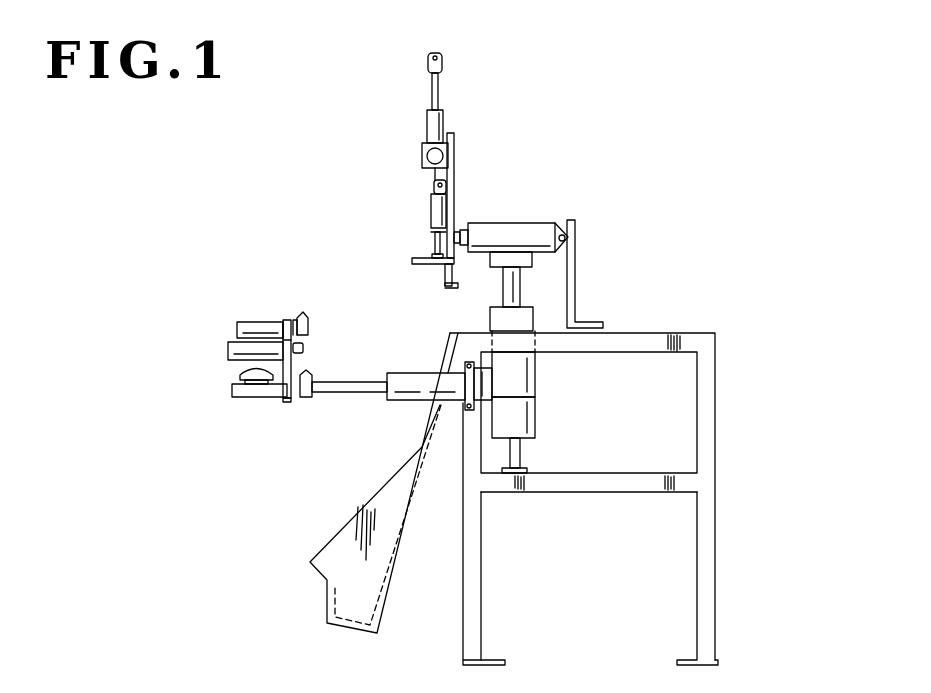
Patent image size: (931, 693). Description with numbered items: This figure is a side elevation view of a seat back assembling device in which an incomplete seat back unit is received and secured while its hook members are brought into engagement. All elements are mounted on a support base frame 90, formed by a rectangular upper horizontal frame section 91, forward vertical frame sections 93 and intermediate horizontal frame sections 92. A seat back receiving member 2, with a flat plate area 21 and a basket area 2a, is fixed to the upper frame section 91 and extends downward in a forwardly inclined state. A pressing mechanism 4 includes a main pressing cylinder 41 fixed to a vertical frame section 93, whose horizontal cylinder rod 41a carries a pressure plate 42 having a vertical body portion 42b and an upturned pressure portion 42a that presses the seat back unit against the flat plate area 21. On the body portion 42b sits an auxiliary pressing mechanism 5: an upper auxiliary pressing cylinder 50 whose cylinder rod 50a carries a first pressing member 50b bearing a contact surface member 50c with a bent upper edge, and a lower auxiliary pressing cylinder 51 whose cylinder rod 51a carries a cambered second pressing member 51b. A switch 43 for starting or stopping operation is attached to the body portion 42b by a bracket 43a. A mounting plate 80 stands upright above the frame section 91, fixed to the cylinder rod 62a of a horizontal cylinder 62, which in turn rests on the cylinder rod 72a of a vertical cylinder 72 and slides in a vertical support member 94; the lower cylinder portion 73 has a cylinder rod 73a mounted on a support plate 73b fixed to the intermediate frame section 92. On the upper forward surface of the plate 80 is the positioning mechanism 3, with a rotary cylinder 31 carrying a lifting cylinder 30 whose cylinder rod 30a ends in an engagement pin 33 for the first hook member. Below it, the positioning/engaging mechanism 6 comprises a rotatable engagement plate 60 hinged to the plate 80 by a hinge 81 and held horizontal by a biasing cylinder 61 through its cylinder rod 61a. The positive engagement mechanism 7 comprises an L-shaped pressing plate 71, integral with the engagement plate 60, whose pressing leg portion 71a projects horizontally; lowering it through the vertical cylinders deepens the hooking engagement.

The seat back receiving member 2 is at (323, 588).
The basket area 2a is at (350, 607).
The flat plate area 21 is at (422, 447).
The positioning mechanism 3 is at (417, 113).
The lifting cylinder 30 is at (445, 122).
The cylinder rod 30a is at (438, 90).
The rotary cylinder 31 is at (422, 148).
The engagement pin 33 is at (437, 53).
The pressing mechanism 4 is at (347, 400).
The main pressing cylinder 41 is at (411, 383).
The cylinder rod 41a is at (360, 388).
The pressure plate 42 is at (287, 400).
The upturned pressure portion 42a is at (302, 402).
The vertical body portion 42b is at (283, 362).
The switch 43 is at (235, 373).
The bracket 43a is at (238, 400).
The auxiliary pressing mechanism 5 is at (228, 318).
The upper auxiliary pressing cylinder 50 is at (260, 320).
The cylinder rod 50a is at (292, 320).
The first pressing member 50b is at (297, 320).
The contact surface member 50c is at (308, 317).
The lower auxiliary pressing cylinder 51 is at (230, 345).
The cylinder rod 51a is at (312, 376).
The second pressing member 51b is at (302, 348).
The positioning/engaging mechanism 6 is at (412, 248).
The rotatable engagement plate 60 is at (418, 262).
The biasing cylinder 61 is at (432, 198).
The cylinder rod 61a is at (430, 233).
The horizontal cylinder 62 is at (537, 225).
The cylinder rod 62a is at (463, 232).
The positive engagement mechanism 7 is at (433, 277).
The pressing plate 71 is at (442, 280).
The pressing leg portion 71a is at (452, 288).
The vertical cylinder 72 is at (530, 372).
The cylinder rod 72a is at (520, 287).
The lower cylinder portion 73 is at (530, 413).
The cylinder rod 73a is at (517, 453).
The support plate 73b is at (500, 470).
The mounting plate 80 is at (455, 165).
The hinge 81 is at (427, 238).
The support base frame 90 is at (717, 380).
The upper horizontal frame section 91 is at (663, 330).
The intermediate horizontal frame section 92 is at (620, 487).
The forward vertical frame section 93 is at (480, 591).
The vertical support member 94 is at (575, 257).